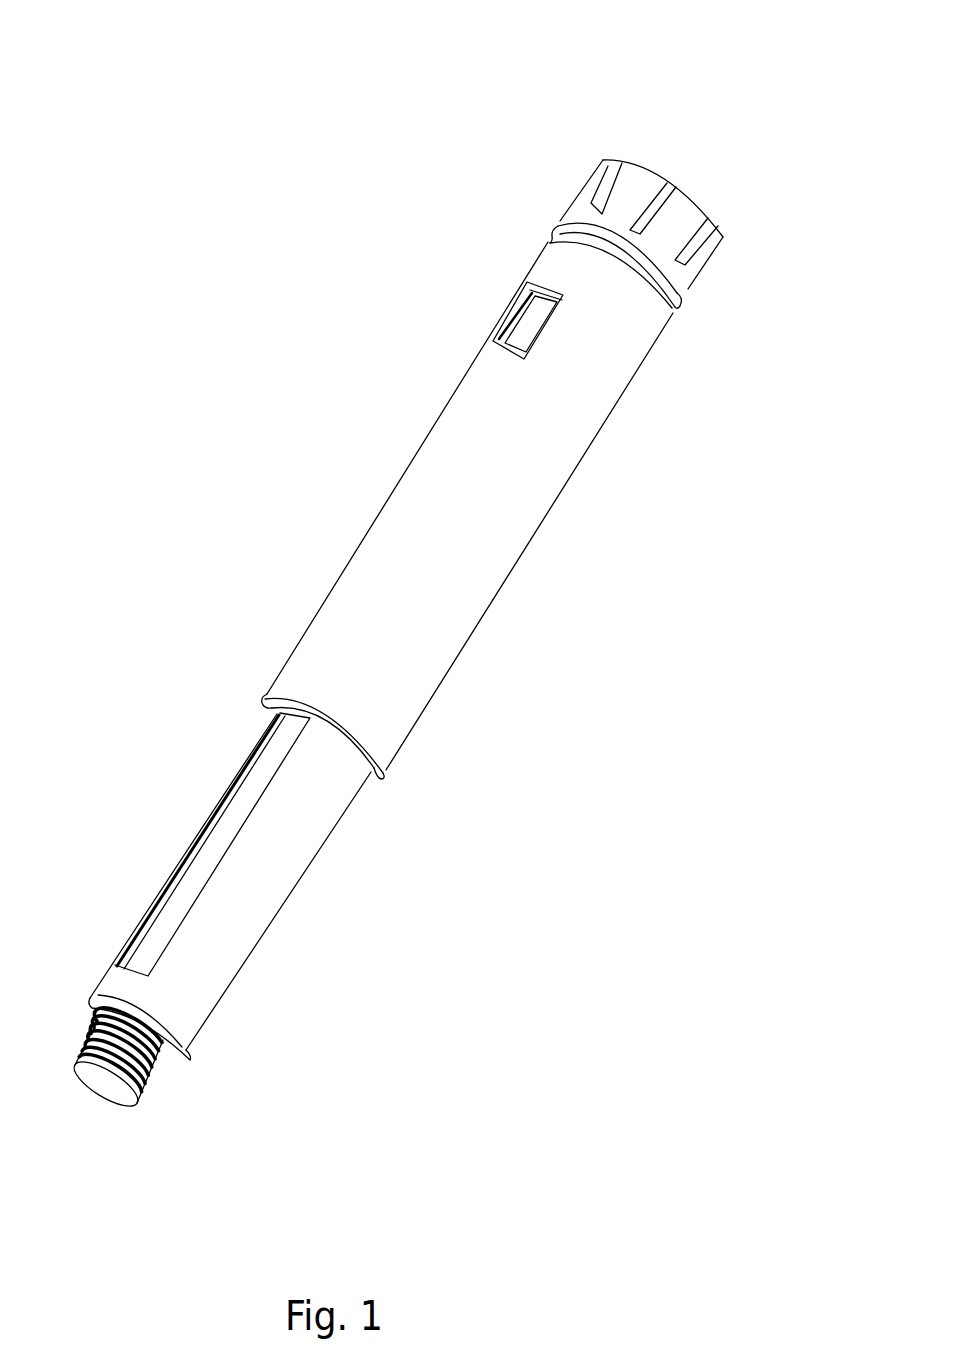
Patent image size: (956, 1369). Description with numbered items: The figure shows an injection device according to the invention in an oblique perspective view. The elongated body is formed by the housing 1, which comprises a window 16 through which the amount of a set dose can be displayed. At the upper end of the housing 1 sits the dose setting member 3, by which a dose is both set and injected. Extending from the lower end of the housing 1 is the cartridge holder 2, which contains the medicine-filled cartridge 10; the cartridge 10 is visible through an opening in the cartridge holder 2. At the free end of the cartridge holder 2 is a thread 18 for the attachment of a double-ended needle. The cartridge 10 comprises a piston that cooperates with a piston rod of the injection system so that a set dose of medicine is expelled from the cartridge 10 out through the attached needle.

The housing 1 is at (300, 512).
The cartridge holder 2 is at (303, 917).
The dose setting member 3 is at (668, 147).
The cartridge 10 is at (230, 822).
The window 16 is at (485, 293).
The thread 18 is at (158, 1082).